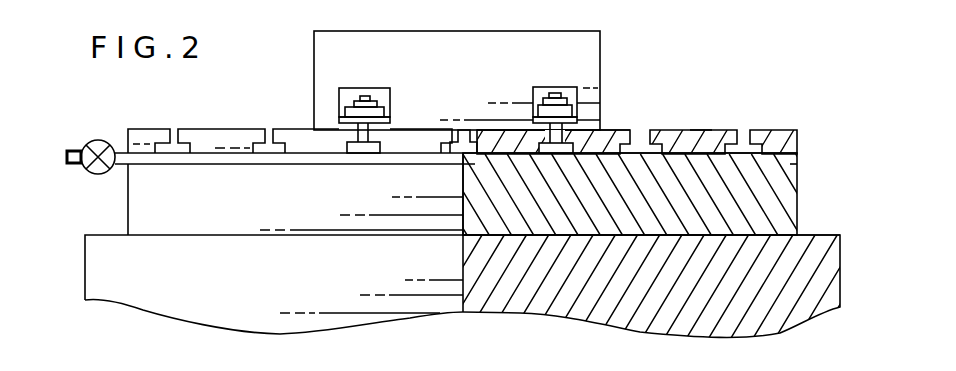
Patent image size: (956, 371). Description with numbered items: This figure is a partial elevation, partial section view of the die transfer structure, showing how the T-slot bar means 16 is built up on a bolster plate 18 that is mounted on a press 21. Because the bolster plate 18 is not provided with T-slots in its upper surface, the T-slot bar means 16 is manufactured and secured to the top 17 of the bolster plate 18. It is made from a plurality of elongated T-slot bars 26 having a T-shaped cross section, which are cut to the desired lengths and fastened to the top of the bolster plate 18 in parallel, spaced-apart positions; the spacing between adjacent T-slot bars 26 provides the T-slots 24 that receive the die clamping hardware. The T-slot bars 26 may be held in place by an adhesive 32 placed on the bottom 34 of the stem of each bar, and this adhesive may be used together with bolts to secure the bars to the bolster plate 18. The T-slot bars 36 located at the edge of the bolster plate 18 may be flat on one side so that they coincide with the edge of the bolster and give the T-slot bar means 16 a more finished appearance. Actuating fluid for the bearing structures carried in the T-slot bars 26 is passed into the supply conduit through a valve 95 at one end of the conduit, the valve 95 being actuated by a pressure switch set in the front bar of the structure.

The T-slot bar means 16 is at (205, 128).
The top of the bolster plate 17 is at (598, 152).
The bolster plate 18 is at (797, 193).
The press 21 is at (105, 235).
The T-slots 24 is at (641, 138).
The T-slot bars 26 is at (700, 130).
The adhesive 32 is at (797, 160).
The bottom of the stem of the T-slot bars 34 is at (797, 135).
The edge T-slot bars 36 is at (763, 130).
The valve 95 is at (104, 140).